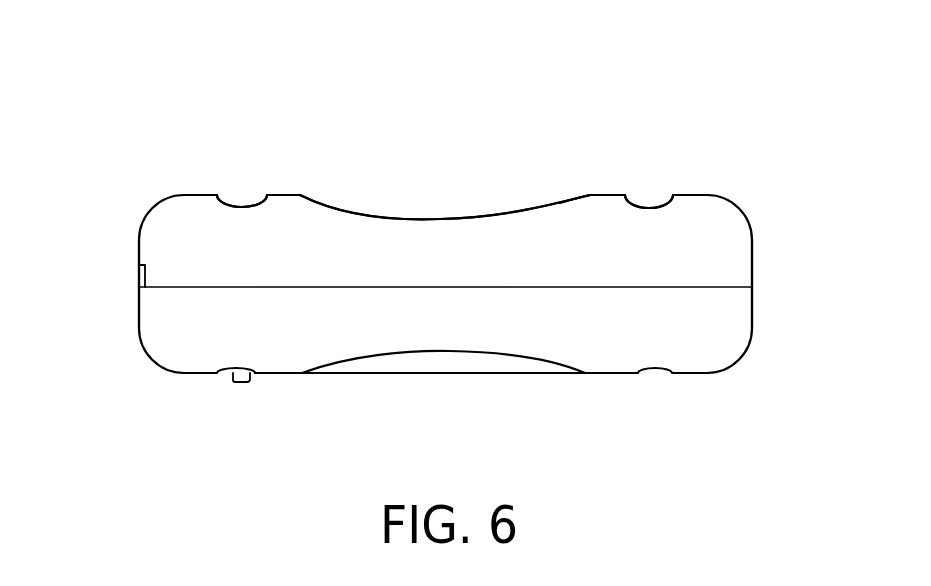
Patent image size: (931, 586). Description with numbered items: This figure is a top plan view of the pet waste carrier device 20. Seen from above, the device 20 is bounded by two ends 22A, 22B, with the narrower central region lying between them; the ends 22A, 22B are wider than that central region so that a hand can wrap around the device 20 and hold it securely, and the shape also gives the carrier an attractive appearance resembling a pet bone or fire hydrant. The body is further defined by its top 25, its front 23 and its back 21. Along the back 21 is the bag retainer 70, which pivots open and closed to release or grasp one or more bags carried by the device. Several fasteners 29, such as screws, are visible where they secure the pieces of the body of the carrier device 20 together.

The pet carrier device 20 is at (659, 50).
The back 21 is at (600, 374).
The end 22A is at (140, 303).
The end 22B is at (752, 298).
The front 23 is at (592, 195).
The top 25 is at (323, 235).
The fasteners 29 is at (250, 200).
The bag retainer 70 is at (401, 367).